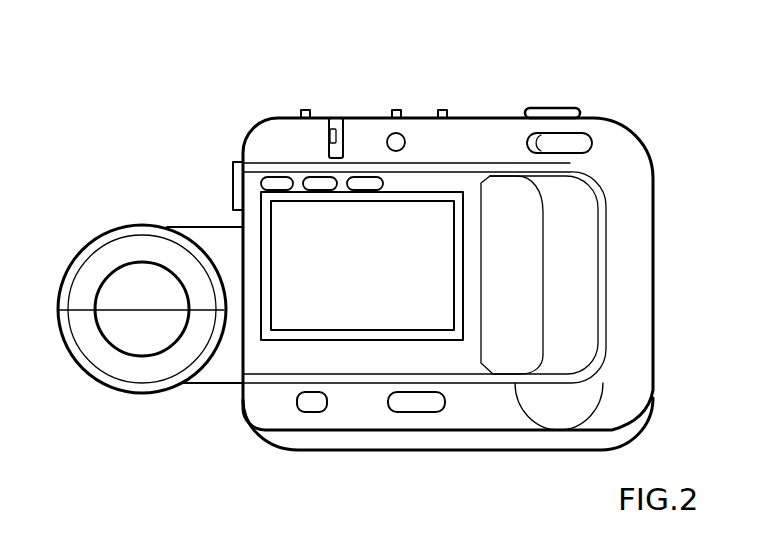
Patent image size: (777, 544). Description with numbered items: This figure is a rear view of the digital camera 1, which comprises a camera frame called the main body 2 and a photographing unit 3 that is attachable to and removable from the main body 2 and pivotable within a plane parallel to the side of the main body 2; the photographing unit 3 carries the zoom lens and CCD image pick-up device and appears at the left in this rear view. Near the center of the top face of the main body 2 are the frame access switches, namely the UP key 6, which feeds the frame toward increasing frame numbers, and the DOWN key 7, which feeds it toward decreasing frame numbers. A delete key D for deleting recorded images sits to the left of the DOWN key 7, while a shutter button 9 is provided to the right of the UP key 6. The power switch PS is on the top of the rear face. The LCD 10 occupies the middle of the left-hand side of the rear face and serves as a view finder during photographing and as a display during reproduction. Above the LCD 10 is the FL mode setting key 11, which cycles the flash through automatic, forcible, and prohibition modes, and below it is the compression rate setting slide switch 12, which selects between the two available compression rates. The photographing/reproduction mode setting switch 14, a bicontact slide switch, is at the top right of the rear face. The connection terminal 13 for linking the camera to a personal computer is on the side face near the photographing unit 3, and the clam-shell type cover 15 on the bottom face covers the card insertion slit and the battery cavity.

The digital camera 1 is at (344, 84).
The main body 2 is at (510, 116).
The photographing unit 3 is at (112, 225).
The UP key 6 is at (442, 109).
The DOWN key 7 is at (397, 109).
The shutter button 9 is at (552, 107).
The LCD 10 is at (362, 258).
The FL mode setting key 11 is at (329, 136).
The compression rate setting slide switch 12 is at (297, 401).
The connection terminal 13 is at (233, 190).
The photographing/reproduction mode setting switch 14 is at (533, 146).
The clam-shell type cover 15 is at (468, 447).
The delete key D is at (304, 109).
The power switch PS is at (388, 136).